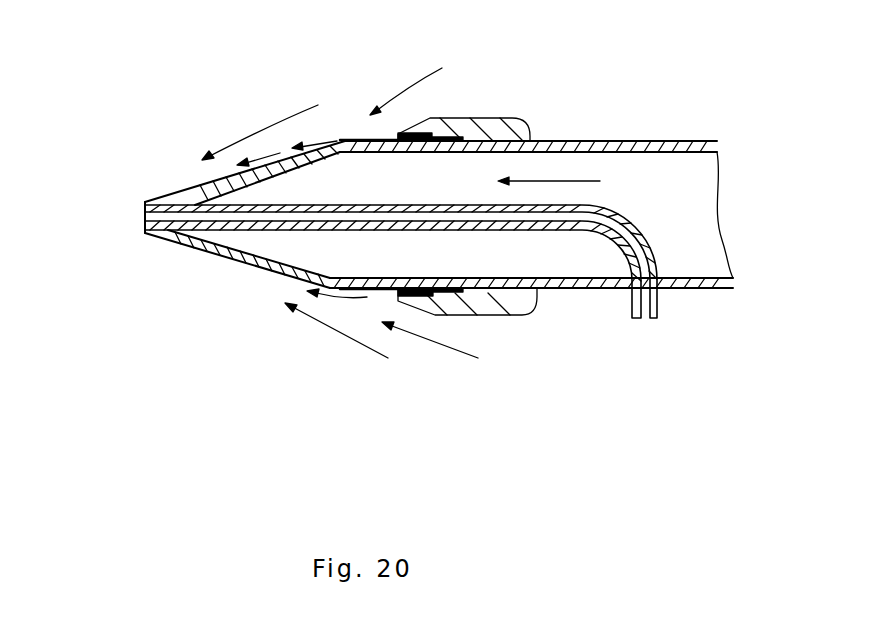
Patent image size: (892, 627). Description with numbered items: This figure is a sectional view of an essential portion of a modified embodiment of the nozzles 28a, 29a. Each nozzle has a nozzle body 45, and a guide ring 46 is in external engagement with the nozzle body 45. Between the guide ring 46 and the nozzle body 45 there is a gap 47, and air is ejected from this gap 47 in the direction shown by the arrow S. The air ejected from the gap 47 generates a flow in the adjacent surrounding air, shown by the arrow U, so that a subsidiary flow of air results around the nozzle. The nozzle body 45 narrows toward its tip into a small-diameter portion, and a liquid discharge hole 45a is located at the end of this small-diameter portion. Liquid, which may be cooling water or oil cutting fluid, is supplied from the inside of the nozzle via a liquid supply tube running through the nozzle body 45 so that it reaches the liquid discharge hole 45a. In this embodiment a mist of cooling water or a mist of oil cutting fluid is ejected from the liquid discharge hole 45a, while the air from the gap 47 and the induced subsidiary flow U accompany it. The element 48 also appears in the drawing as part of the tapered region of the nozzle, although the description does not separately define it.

The nozzle body 45 is at (640, 140).
The liquid discharge hole 45a is at (145, 218).
The guide ring 46 is at (492, 118).
The gap 47 is at (435, 141).
The tapered portion 48 is at (212, 207).
The nozzle 28a is at (444, 166).
The nozzle 29a is at (590, 122).
The arrow S s is at (380, 140).
The arrow U u is at (447, 345).